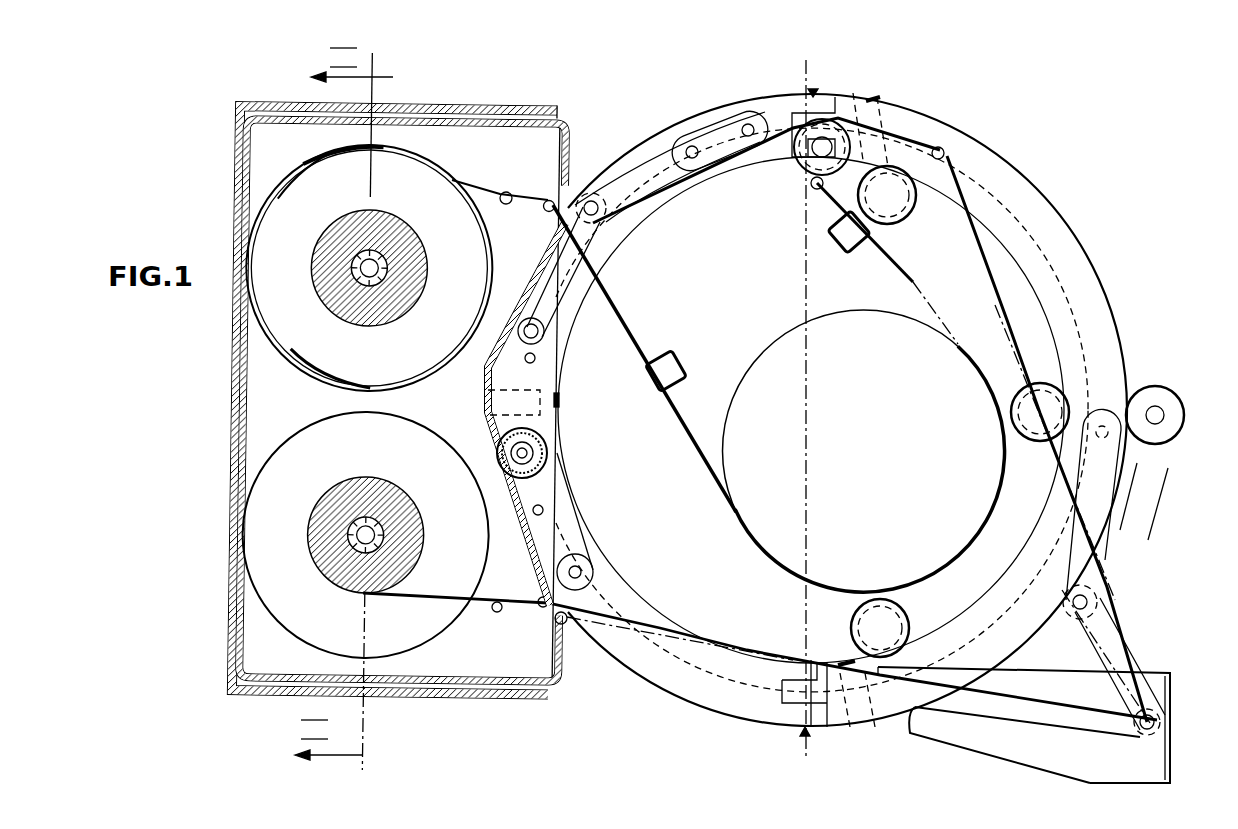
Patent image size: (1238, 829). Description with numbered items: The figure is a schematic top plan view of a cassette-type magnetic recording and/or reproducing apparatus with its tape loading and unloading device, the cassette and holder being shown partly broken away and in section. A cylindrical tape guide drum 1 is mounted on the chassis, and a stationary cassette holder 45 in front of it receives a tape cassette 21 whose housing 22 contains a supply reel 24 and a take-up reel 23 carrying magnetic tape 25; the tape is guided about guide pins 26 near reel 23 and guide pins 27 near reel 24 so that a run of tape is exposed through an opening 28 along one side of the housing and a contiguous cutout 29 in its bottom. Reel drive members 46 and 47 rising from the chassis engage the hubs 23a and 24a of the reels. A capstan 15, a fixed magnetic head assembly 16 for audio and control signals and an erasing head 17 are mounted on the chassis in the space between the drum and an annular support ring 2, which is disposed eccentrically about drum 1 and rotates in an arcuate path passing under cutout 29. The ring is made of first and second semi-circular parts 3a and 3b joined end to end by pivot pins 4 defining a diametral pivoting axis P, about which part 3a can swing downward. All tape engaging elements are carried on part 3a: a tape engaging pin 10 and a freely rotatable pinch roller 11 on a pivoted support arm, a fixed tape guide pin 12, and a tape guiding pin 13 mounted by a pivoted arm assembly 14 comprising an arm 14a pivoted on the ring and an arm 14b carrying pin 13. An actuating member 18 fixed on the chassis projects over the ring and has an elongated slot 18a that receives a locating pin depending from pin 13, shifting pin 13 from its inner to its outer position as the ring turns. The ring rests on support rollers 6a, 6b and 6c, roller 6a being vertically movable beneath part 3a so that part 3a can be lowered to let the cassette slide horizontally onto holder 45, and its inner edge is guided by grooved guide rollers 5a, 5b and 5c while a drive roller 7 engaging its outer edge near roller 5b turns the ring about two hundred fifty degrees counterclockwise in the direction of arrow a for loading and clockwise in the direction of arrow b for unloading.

The tape guide drum 1 is at (781, 340).
The support ring 2 is at (1093, 265).
The first semi-circular part 3a is at (662, 683).
The second semi-circular part 3b is at (1042, 222).
The pivot pins 4 is at (813, 95).
The guide roller 5a is at (906, 625).
The guide roller 5b is at (1016, 400).
The guide roller 5c is at (912, 212).
The support roller 6a is at (560, 403).
The support roller 6b is at (862, 725).
The support roller 6c is at (882, 97).
The drive roller 7 is at (1178, 400).
The tape engaging pin 10 is at (545, 510).
The pinch roller 11 is at (548, 450).
The tape guide pin 12 is at (537, 360).
The tape guiding pin 13 is at (540, 333).
The pivoted arm assembly 14 is at (616, 168).
The arm 14a is at (707, 182).
The arm 14b is at (567, 275).
The capstan 15 is at (811, 187).
The fixed magnetic head assembly 16 is at (848, 250).
The erasing head 17 is at (674, 353).
The actuating member 18 is at (1153, 763).
The elongated slot 18a is at (1107, 733).
The tape cassette 21 is at (200, 650).
The housing 22 is at (240, 414).
The take-up reel 23 is at (252, 476).
The hub 23a is at (335, 503).
The supply reel 24 is at (262, 205).
The hub 24a is at (335, 237).
The magnetic tape 25 is at (492, 612).
The guide pins 26 is at (542, 608).
The guide pins 27 is at (548, 200).
The opening 28 is at (568, 622).
The opening or cutout 29 is at (476, 372).
The cassette holder 45 is at (390, 698).
The take-up reel drive member 46 is at (380, 530).
The supply reel drive member 47 is at (380, 262).
The pivoting axis P is at (812, 466).
The arrow a is at (1142, 512).
The arrow b is at (1170, 497).